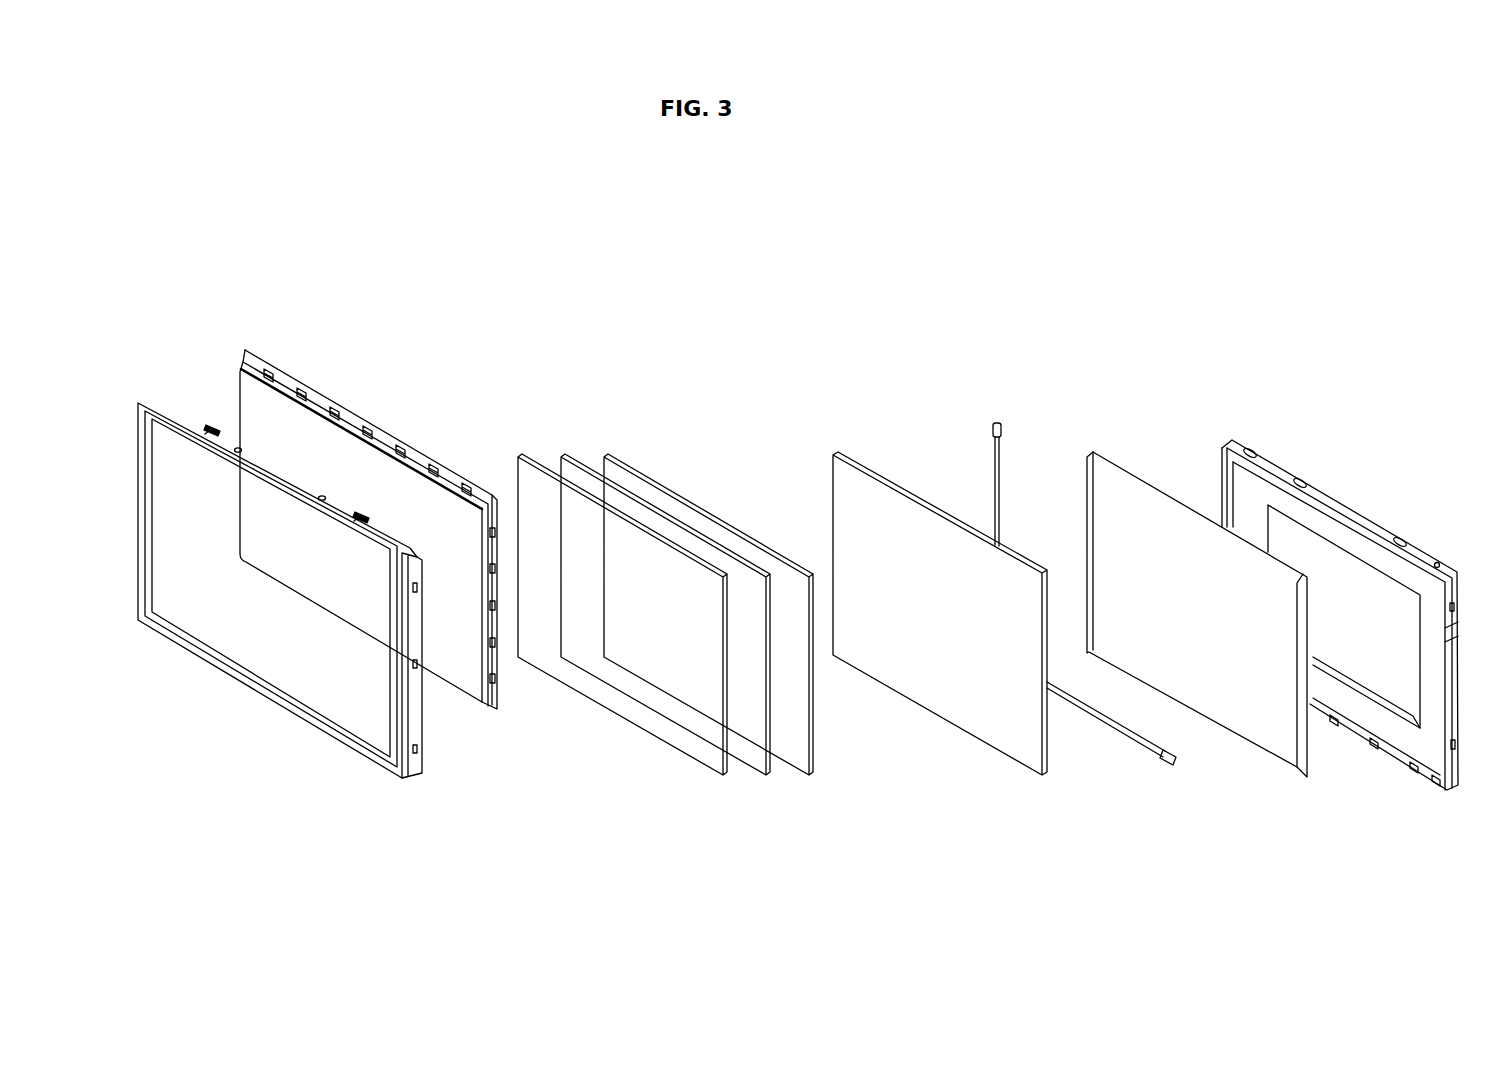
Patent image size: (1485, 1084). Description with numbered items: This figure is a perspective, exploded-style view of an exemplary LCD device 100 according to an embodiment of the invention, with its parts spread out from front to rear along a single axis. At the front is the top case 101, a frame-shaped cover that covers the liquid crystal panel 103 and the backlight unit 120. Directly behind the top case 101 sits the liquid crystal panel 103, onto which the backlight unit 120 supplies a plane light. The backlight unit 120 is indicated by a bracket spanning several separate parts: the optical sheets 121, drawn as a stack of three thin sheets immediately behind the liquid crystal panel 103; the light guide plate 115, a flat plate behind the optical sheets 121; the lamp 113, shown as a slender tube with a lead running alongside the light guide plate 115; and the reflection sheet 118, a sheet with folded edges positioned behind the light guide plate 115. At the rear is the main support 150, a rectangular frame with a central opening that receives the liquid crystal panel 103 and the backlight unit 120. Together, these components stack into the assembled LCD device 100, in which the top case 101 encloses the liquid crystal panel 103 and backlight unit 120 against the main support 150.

The LCD device 100 is at (160, 161).
The top case 101 is at (143, 401).
The liquid crystal panel 103 is at (287, 432).
The backlight unit 120 is at (1110, 355).
The optical sheets 121 is at (582, 410).
The light guide plate 115 is at (835, 453).
The lamp 113 is at (999, 423).
The reflection sheet 118 is at (1112, 460).
The main support 150 is at (1252, 448).